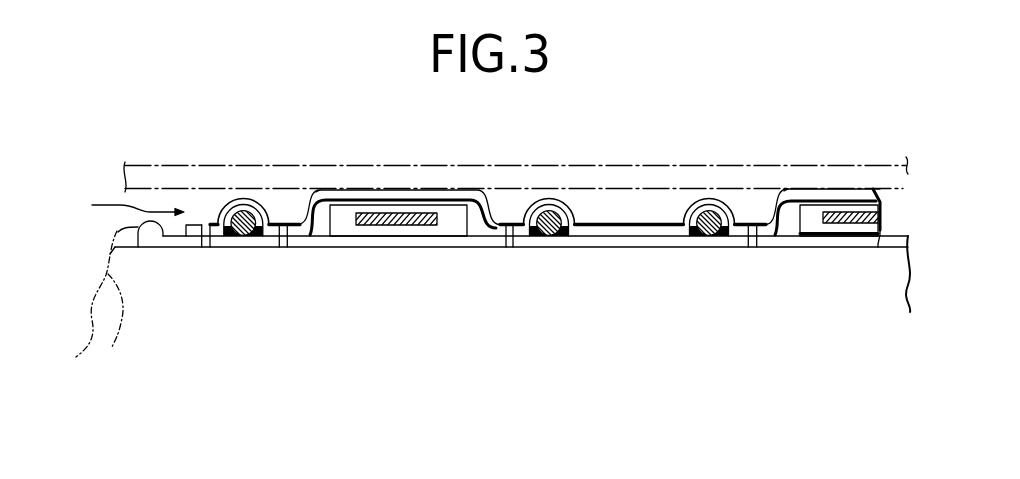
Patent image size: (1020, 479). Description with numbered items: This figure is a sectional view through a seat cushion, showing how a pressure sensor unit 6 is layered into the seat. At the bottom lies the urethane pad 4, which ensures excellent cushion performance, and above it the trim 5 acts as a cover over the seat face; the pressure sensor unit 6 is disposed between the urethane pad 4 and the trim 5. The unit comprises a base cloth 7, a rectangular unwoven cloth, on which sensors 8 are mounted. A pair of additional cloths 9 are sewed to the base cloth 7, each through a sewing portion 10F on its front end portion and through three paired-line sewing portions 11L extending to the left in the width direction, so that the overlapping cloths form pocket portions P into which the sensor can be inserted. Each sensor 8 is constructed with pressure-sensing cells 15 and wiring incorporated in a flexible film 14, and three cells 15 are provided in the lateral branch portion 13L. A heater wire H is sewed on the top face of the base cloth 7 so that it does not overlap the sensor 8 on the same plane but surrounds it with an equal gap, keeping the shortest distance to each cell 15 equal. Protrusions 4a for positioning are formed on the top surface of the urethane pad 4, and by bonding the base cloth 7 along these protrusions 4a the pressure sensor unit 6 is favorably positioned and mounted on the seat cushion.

The urethane pad 4 is at (90, 307).
The protrusions 4a is at (118, 232).
The trim 5 is at (171, 164).
The pressure sensor unit 6 is at (126, 204).
The base cloth 7 is at (640, 247).
The sensor 8 is at (414, 205).
The additional cloths 9 is at (642, 222).
The sewing portion 10F is at (204, 247).
The sewing portions 11L is at (283, 247).
The lateral branch portion 13L is at (595, 177).
The film 14 is at (455, 227).
The cells 15 is at (397, 225).
The heater wire H is at (244, 197).
The pocket portions P is at (317, 189).